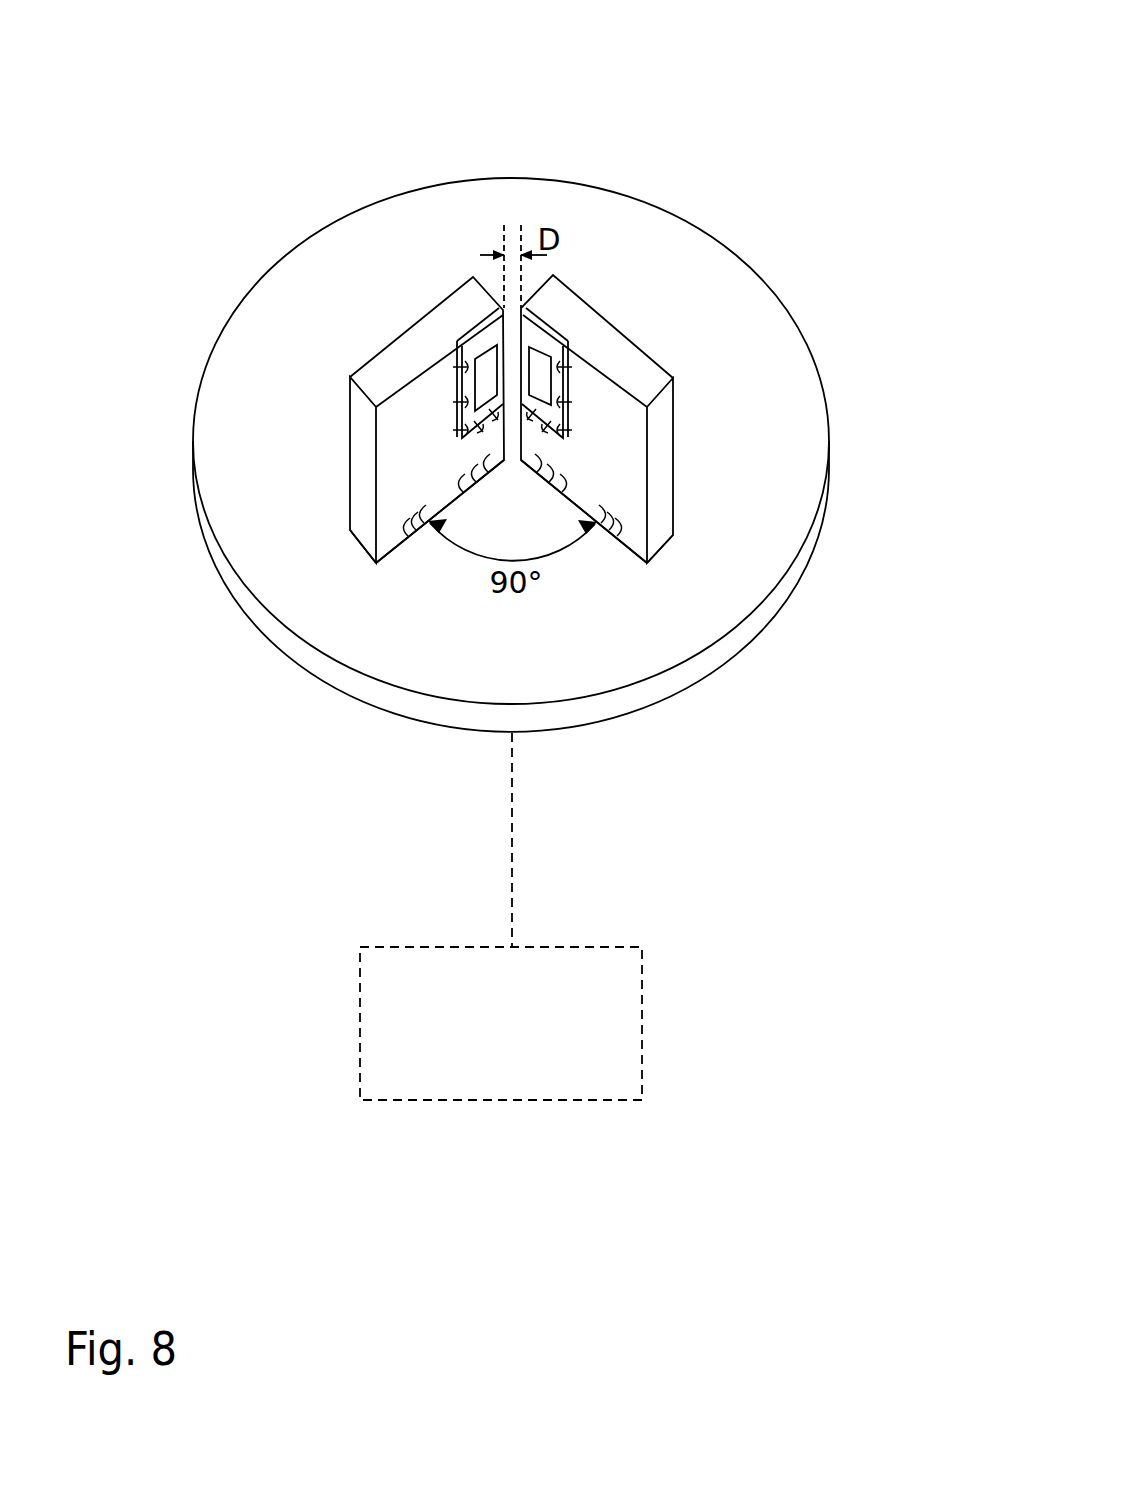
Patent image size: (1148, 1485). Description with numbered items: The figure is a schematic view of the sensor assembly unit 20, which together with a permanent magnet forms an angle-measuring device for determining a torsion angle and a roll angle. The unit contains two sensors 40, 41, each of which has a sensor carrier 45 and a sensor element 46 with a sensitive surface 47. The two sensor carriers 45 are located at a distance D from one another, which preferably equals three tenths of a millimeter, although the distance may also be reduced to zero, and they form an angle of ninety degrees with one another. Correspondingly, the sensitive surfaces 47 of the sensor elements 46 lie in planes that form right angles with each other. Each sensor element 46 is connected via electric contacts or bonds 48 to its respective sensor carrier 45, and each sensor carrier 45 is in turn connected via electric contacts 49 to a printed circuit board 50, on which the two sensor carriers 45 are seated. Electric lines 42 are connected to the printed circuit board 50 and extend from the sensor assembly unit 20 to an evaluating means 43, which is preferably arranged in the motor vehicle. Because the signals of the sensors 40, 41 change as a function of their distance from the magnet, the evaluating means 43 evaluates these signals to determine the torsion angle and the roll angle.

The sensor assembly unit 20 is at (300, 143).
The sensor 40 is at (347, 457).
The sensor 41 is at (677, 437).
The electric lines 42 is at (515, 830).
The evaluating means 43 is at (543, 1101).
The sensor carrier 45 is at (370, 495).
The sensor element 46 is at (497, 332).
The sensitive surface 47 is at (491, 376).
The electric contacts (bonds) 48 is at (540, 436).
The electric contacts 49 is at (622, 555).
The printed circuit board 50 is at (388, 640).